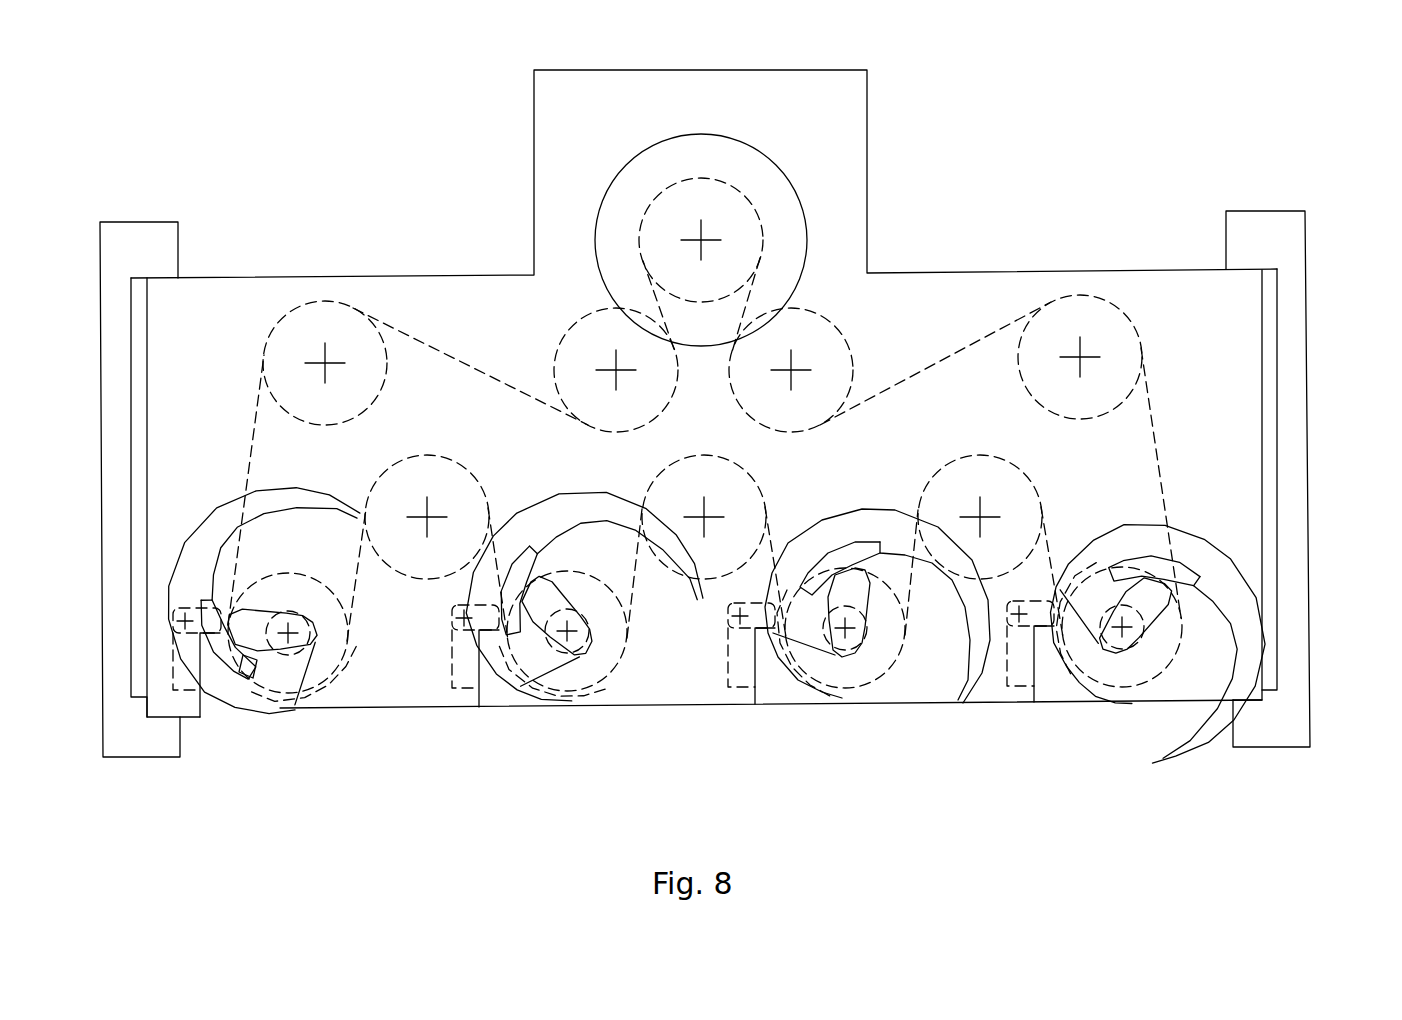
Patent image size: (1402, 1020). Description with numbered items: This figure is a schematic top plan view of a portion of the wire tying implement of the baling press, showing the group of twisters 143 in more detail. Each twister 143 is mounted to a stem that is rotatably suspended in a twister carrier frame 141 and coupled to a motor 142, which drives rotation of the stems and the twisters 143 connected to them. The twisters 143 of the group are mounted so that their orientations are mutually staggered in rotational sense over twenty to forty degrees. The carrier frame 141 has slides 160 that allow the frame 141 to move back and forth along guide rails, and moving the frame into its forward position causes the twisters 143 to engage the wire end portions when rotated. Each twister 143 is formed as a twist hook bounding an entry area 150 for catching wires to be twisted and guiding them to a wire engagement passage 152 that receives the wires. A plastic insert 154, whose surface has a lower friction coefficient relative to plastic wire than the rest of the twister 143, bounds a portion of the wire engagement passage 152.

The twister carrier frame 141 is at (1045, 283).
The motor 142 is at (777, 197).
The twister 143 is at (282, 720).
The entry area 150 is at (325, 556).
The wire engagement passage 152 is at (247, 660).
The plastic insert 154 is at (210, 660).
The slide 160 is at (100, 357).